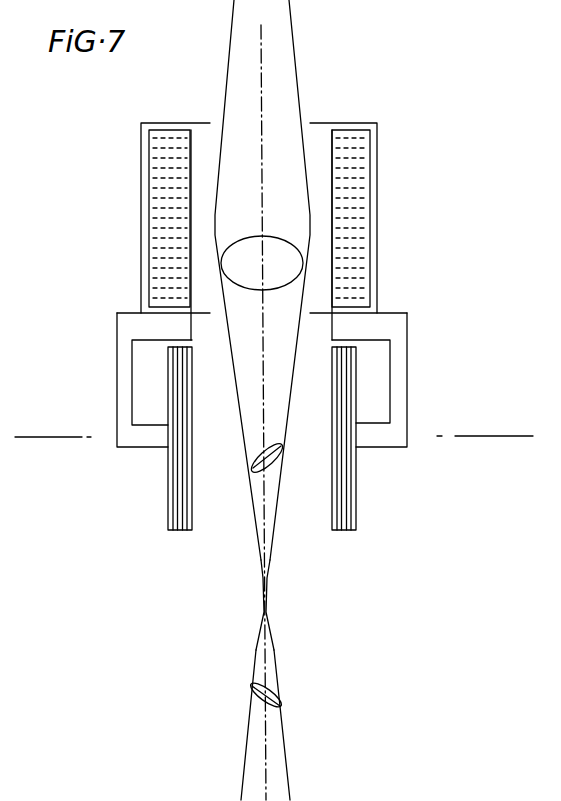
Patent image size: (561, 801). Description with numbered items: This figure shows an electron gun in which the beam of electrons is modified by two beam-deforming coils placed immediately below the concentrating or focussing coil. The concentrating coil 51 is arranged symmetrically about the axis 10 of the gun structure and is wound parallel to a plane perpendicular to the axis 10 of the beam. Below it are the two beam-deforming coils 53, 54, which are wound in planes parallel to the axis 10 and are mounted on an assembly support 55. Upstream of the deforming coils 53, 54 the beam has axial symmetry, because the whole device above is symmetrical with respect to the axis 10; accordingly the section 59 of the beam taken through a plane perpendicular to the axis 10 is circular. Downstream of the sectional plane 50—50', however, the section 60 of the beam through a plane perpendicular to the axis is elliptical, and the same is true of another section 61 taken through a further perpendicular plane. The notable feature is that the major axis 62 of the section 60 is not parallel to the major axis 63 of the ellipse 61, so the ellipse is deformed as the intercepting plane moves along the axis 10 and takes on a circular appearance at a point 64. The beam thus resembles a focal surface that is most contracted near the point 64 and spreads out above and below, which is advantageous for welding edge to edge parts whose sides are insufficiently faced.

The axis 10 is at (263, 67).
The sectional plane 50 is at (53, 397).
The sectional plane 50' is at (494, 400).
The concentrating coil 51 is at (358, 200).
The beam-deforming coil 53 is at (348, 477).
The beam-deforming coil 54 is at (175, 485).
The assembly support 55 is at (398, 348).
The section of the beam 59 is at (303, 245).
The section of the beam 60 is at (255, 451).
The section of the beam 61 is at (252, 698).
The major axis 62 is at (279, 469).
The major axis 63 is at (282, 691).
The point 64 is at (261, 580).